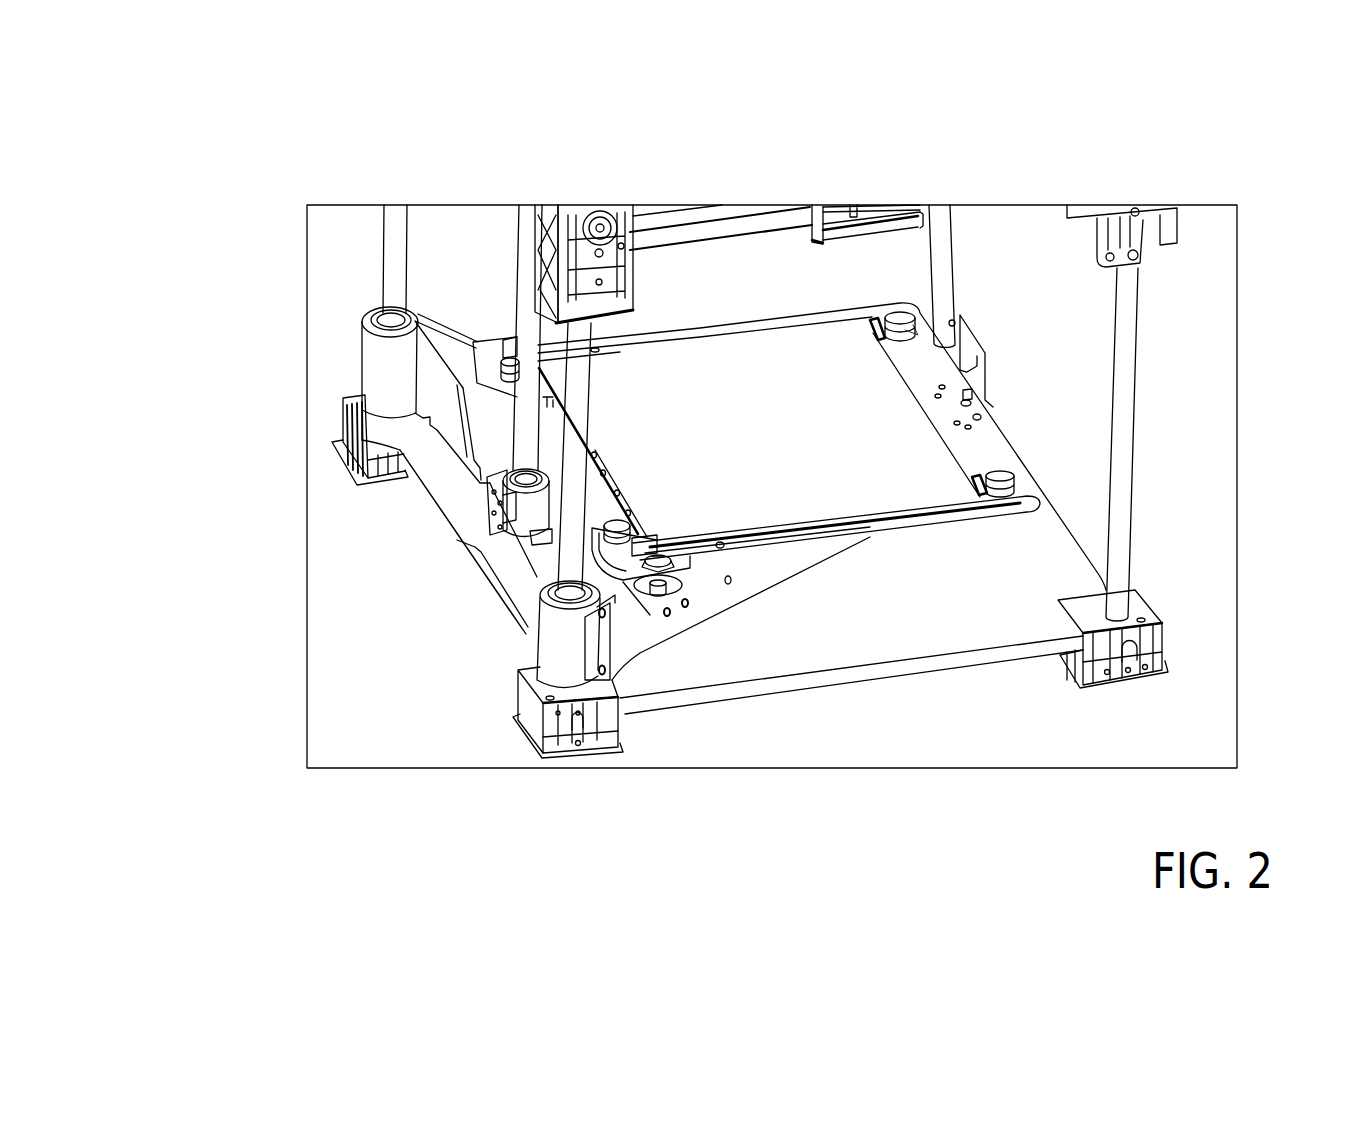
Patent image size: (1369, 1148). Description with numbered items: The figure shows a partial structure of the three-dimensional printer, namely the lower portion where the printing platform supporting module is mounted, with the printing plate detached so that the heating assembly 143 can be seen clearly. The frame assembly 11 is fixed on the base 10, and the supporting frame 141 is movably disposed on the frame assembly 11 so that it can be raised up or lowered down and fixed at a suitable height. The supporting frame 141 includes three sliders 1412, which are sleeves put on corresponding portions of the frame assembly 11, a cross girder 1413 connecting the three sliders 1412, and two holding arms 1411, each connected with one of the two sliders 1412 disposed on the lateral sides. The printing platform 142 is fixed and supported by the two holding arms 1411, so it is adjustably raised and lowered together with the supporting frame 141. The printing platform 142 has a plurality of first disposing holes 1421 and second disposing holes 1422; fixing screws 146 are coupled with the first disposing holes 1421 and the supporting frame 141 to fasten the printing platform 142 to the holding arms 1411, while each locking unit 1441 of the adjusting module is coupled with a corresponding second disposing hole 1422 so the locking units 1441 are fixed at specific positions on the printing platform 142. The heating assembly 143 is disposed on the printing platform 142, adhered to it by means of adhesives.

The base 10 is at (1103, 657).
The frame assembly 11 is at (577, 407).
The supporting frame 141 is at (183, 480).
The holding arm 1411 is at (378, 385).
The slider 1412 is at (473, 480).
The cross girder 1413 is at (430, 487).
The printing platform 142 is at (933, 523).
The first disposing hole 1421 is at (990, 405).
The second disposing hole 1422 is at (1042, 513).
The heating assembly 143 is at (865, 457).
The locking unit 1441 is at (613, 521).
The fixing screw 146 is at (660, 547).